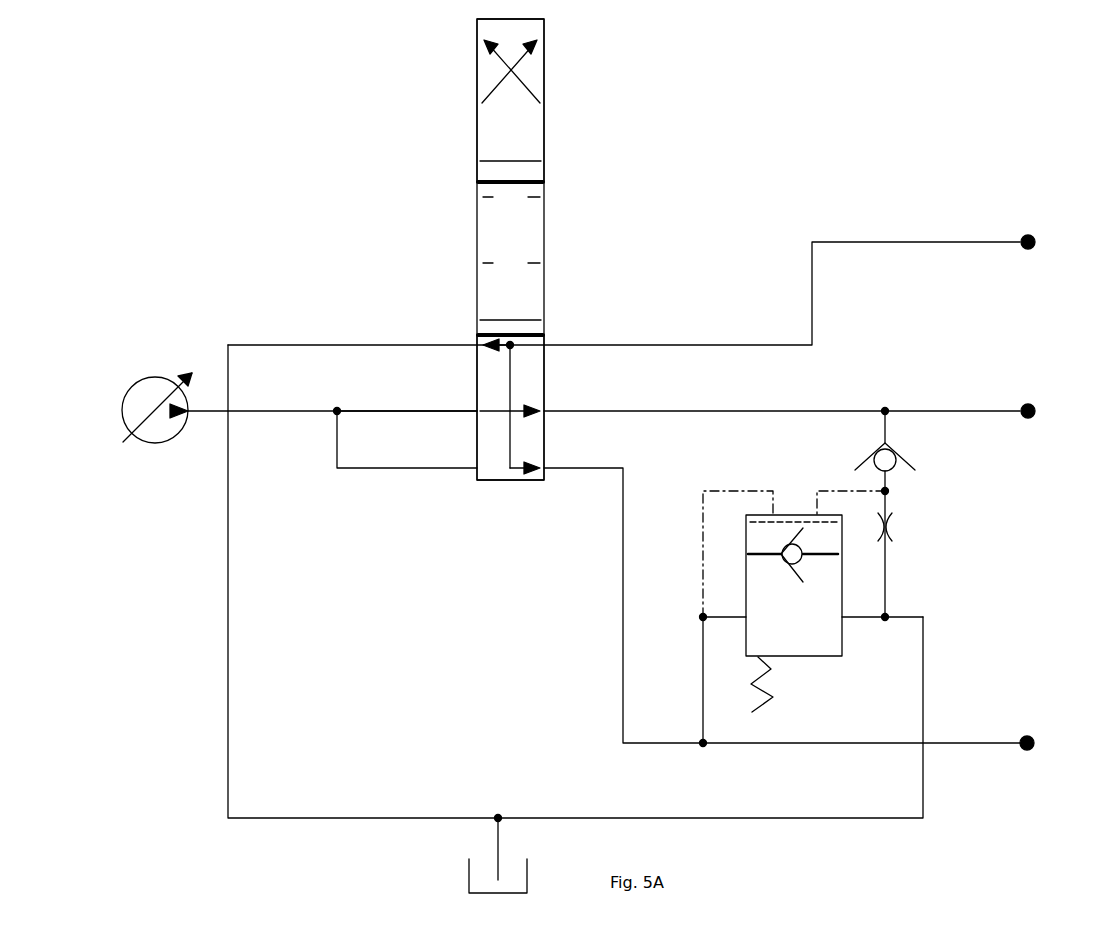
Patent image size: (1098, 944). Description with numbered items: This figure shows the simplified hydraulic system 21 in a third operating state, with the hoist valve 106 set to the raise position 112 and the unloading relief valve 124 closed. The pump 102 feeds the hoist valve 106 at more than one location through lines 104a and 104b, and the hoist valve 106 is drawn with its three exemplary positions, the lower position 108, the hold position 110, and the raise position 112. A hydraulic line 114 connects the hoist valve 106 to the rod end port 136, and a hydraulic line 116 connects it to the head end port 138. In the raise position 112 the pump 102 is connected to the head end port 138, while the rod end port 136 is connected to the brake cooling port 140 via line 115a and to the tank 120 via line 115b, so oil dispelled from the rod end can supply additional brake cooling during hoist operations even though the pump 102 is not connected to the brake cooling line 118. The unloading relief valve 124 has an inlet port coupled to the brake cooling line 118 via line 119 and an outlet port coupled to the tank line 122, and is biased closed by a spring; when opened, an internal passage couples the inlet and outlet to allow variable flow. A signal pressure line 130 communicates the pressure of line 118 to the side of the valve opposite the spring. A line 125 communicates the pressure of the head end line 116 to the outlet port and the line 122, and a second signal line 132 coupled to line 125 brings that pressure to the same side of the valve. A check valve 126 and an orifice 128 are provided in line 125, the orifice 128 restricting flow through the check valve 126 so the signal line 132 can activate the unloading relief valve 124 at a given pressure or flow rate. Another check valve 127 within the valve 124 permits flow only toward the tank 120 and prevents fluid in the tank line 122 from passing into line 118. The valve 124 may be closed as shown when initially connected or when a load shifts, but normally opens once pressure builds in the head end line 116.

The hydraulic system 21 is at (669, 173).
The pump 102 is at (122, 398).
The line 104a is at (350, 408).
The line 104b is at (436, 465).
The hoist valve 106 is at (458, 488).
The lower position 108 is at (477, 140).
The hold position 110 is at (544, 232).
The raise position 112 is at (535, 483).
The hydraulic line 114 is at (690, 345).
The line 115a is at (512, 352).
The line 115b is at (500, 352).
The hydraulic line 116 is at (690, 411).
The brake cooling line 118 is at (678, 745).
The line 119 is at (702, 643).
The tank 120 is at (530, 880).
The line 122 is at (822, 818).
The unloading relief valve 124 is at (795, 657).
The line 125 is at (892, 425).
The check valve 126 is at (900, 452).
The check valve 127 is at (782, 545).
The orifice 128 is at (898, 523).
The signal pressure line 130 is at (750, 490).
The second signal line 132 is at (845, 492).
The rod end port 136 is at (1040, 243).
The head end port 138 is at (1040, 412).
The brake cooling port 140 is at (1040, 743).